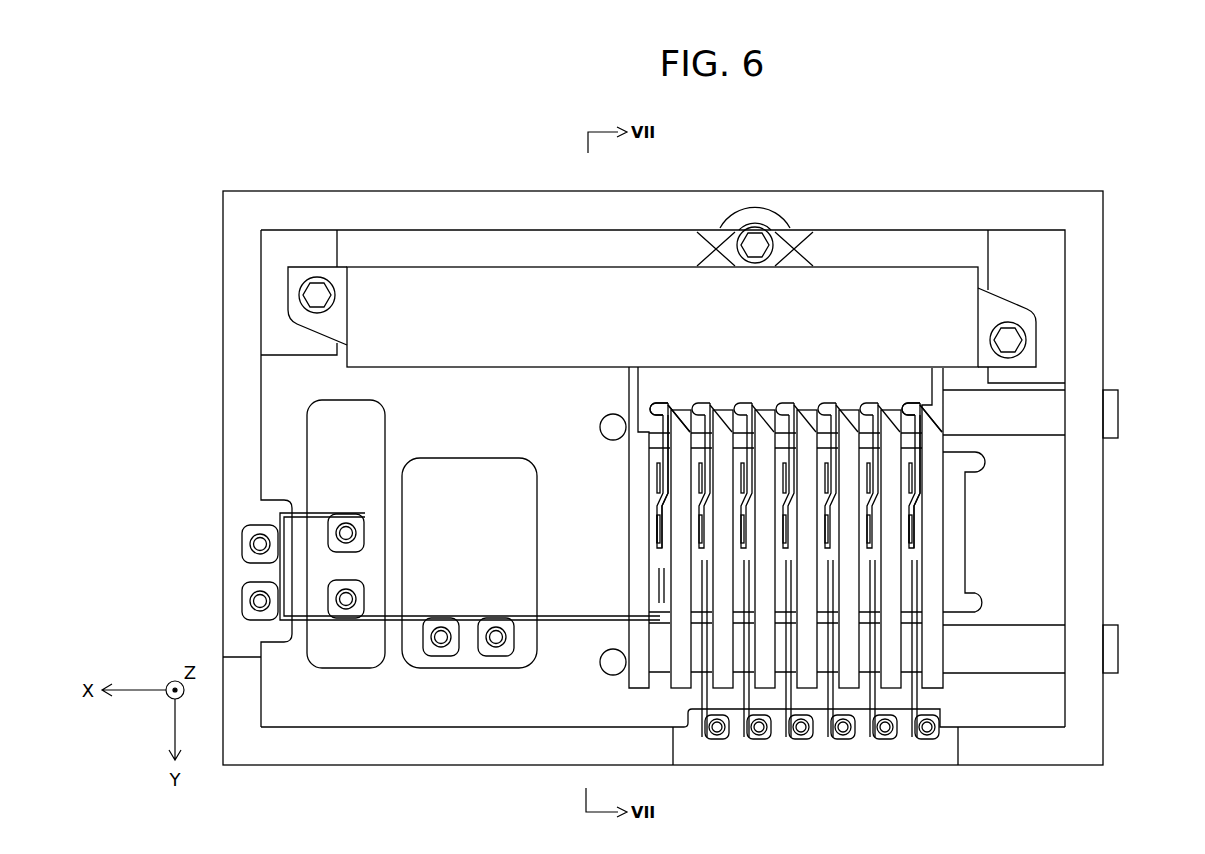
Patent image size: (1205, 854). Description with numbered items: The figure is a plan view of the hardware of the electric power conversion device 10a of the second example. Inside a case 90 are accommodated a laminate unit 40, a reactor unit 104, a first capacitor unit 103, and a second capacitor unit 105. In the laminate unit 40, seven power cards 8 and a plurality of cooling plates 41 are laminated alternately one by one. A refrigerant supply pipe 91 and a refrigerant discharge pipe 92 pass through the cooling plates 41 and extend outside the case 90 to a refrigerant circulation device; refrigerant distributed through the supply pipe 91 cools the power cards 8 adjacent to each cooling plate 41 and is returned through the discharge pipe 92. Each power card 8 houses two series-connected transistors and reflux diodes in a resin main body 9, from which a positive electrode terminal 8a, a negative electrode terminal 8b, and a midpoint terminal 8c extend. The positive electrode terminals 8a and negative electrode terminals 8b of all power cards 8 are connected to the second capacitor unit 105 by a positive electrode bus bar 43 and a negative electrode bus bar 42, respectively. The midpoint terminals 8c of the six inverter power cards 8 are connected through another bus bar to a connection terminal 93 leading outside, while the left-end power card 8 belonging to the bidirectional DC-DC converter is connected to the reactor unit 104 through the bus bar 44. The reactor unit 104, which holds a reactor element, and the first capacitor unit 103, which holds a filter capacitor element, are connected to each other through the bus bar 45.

The electric power conversion device 10a is at (238, 140).
The second capacitor unit 105 is at (400, 277).
The positive electrode bus bar 43 is at (644, 420).
The power card 8 is at (686, 455).
The positive electrode terminal 8a is at (657, 480).
The negative electrode terminal 8b is at (657, 532).
The midpoint terminal 8c is at (657, 585).
The resin main body 9 is at (657, 605).
The case 90 is at (1057, 208).
The refrigerant supply pipe 91 is at (1053, 405).
The refrigerant discharge pipe 92 is at (1053, 658).
The negative electrode bus bar 42 is at (940, 481).
The laminate unit 40 is at (660, 695).
The cooling plate 41 is at (937, 682).
The connection terminal 93 is at (700, 740).
The first capacitor unit 103 is at (318, 647).
The bus bar 45 is at (347, 627).
The reactor unit 104 is at (413, 648).
The bus bar 44 is at (550, 653).